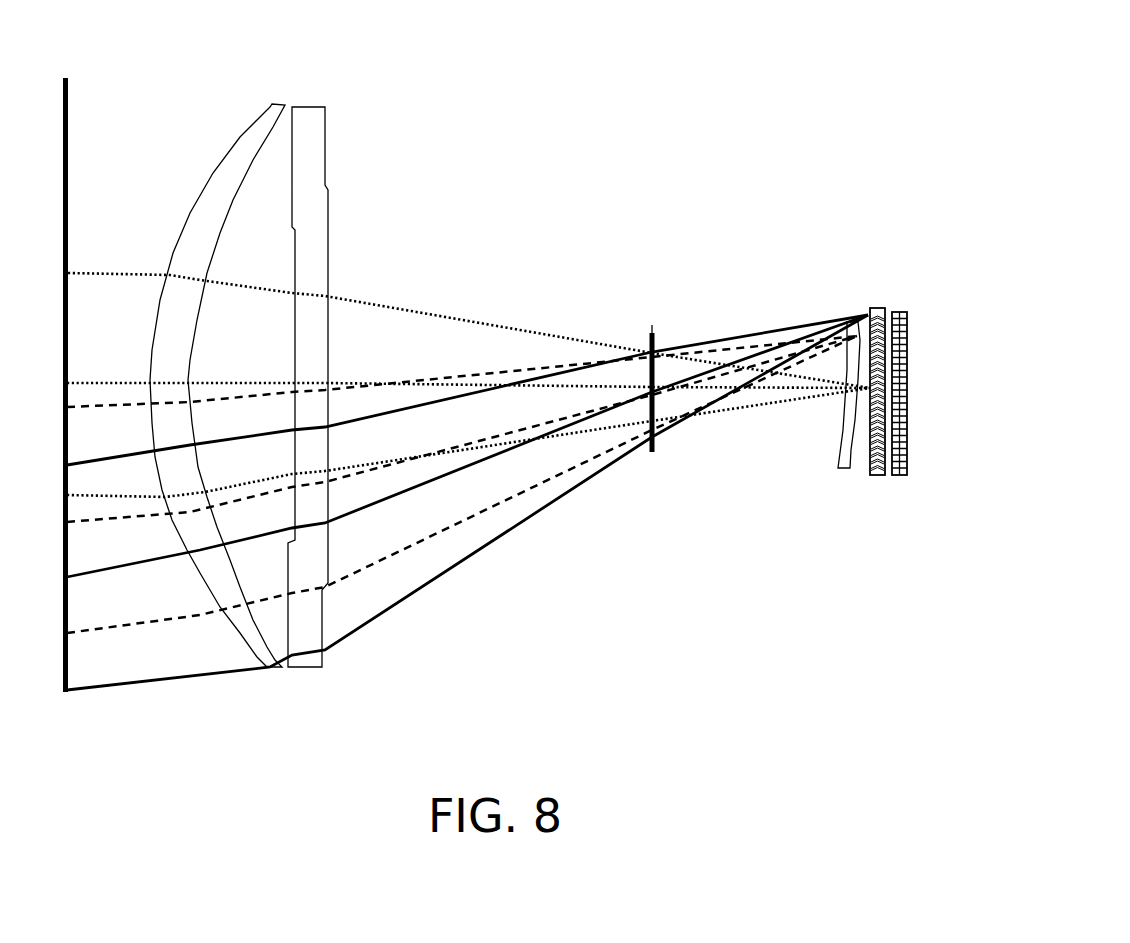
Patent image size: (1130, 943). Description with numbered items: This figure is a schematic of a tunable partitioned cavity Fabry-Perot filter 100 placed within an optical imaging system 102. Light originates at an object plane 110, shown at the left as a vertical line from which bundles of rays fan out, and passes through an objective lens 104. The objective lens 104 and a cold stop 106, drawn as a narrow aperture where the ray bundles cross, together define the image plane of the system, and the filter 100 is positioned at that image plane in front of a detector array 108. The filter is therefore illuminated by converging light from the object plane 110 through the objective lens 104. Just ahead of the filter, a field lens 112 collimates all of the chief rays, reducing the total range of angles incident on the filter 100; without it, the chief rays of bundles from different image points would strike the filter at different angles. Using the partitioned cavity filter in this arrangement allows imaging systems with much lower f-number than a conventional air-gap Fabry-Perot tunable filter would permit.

The partitioned cavity Fabry-Perot filter 100 is at (884, 300).
The optical imaging system 102 is at (676, 179).
The objective lens 104 is at (324, 96).
The cold stop 106 is at (652, 482).
The detector array 108 is at (918, 457).
The object plane 110 is at (93, 113).
The field lens 112 is at (840, 496).